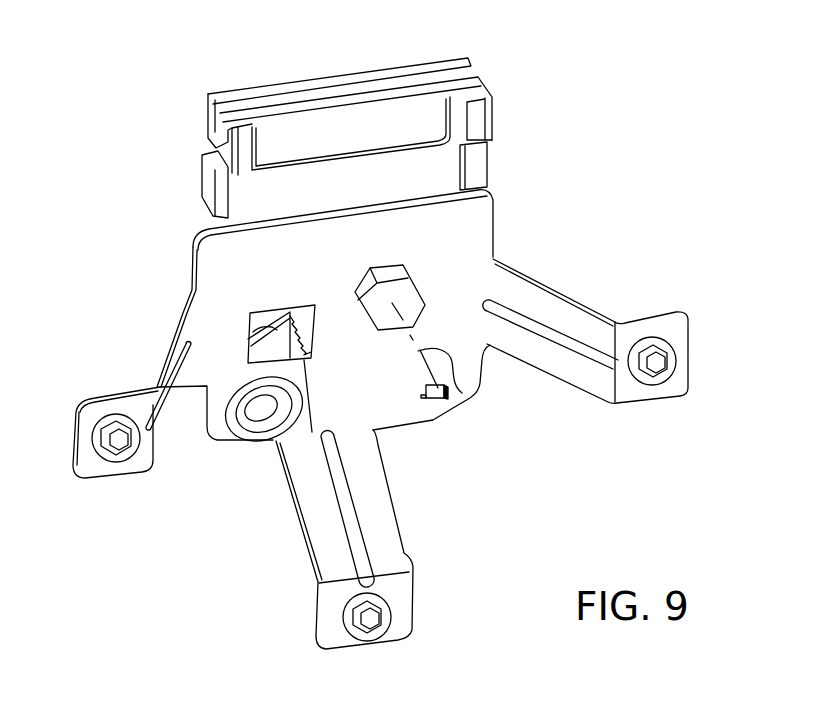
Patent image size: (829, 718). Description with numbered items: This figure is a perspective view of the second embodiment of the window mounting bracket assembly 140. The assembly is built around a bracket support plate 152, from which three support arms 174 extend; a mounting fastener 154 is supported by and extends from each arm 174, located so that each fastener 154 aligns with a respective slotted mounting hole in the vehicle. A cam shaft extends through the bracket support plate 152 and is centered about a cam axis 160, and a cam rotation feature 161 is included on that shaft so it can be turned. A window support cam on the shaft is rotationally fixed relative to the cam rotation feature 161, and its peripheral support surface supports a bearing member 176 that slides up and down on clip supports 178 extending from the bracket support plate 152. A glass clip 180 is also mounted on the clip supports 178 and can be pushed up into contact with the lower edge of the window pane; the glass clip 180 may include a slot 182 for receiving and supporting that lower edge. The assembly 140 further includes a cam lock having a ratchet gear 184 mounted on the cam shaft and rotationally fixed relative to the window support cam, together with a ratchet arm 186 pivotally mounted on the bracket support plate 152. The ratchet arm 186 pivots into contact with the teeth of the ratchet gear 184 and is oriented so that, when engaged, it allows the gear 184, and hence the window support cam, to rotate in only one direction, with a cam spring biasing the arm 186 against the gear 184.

The window mounting bracket assembly 140 is at (650, 136).
The bracket support plate 152 is at (497, 223).
The mounting fastener 154 is at (125, 453).
The cam axis 160 is at (462, 393).
The cam rotation feature 161 is at (378, 330).
The support arm 174 is at (582, 395).
The bearing member 176 is at (202, 155).
The clip support 178 is at (476, 79).
The glass clip 180 is at (206, 120).
The slot 182 is at (470, 64).
The ratchet gear 184 is at (280, 440).
The ratchet arm 186 is at (285, 316).